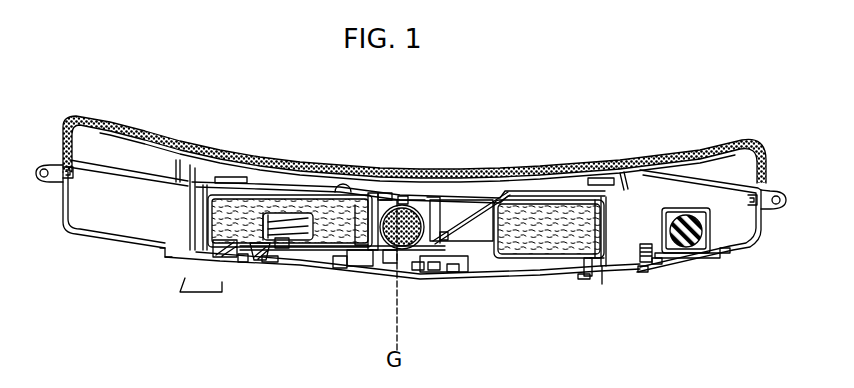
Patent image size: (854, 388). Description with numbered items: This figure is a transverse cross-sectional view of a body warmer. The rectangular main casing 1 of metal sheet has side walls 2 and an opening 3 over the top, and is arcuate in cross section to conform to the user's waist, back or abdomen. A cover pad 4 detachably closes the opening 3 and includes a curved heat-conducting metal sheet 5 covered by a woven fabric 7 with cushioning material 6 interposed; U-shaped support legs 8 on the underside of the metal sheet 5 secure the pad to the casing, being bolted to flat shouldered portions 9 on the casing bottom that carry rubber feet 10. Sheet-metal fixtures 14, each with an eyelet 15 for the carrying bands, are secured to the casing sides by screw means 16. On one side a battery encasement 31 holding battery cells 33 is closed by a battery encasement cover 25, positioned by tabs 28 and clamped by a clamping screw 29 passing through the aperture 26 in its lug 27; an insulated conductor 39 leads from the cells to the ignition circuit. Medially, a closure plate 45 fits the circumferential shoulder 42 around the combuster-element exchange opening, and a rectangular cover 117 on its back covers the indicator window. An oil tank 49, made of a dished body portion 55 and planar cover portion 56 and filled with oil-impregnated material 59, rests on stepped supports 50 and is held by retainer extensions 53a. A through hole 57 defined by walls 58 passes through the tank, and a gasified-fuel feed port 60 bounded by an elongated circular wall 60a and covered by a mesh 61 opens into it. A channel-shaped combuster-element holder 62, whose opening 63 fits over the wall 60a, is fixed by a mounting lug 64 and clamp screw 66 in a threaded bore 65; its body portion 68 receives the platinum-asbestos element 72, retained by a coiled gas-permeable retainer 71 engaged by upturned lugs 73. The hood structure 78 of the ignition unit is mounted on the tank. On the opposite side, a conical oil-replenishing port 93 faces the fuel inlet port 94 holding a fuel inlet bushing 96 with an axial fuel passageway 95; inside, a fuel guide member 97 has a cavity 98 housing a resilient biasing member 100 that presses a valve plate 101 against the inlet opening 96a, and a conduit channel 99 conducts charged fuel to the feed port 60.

The main casing 1 is at (517, 278).
The side walls 2 is at (68, 208).
The opening 3 is at (740, 178).
The cover pad 4 is at (735, 142).
The metal sheet 5 is at (700, 156).
The cushioning material 6 is at (683, 155).
The woven fabric 7 is at (667, 154).
The support legs 8 is at (634, 189).
The shouldered portions 9 is at (166, 250).
The feet 10 is at (630, 309).
The fixtures 14 is at (778, 193).
The eyelet 15 is at (776, 212).
The screw means 16 is at (747, 200).
The battery encasement cover 25 is at (694, 258).
The through aperture 26 is at (655, 247).
The lug 27 is at (643, 273).
The tabs 28 is at (724, 253).
The clamping screw 29 is at (657, 265).
The battery encasement 31 is at (710, 224).
The battery cells 33 is at (690, 245).
The insulated conductor 39 is at (514, 190).
The circumferential shoulder 42 is at (455, 275).
The closure plate 45 is at (418, 272).
The oil tank 49 is at (584, 278).
The stepped supports 50 is at (630, 292).
The extension 53a is at (608, 182).
The body portion 55 is at (592, 280).
The cover portion 56 is at (556, 212).
The through hole 57 is at (506, 196).
The walls 58 is at (544, 204).
The oil-impregnated material 59 is at (600, 182).
The gasified-fuel feed port 60 is at (383, 210).
The elongated circular wall 60a is at (405, 200).
The mesh 61 is at (372, 195).
The combuster-element holder 62 is at (414, 206).
The opening 63 is at (388, 195).
The mounting lug 64 is at (375, 272).
The threaded bore 65 is at (372, 235).
The clamp screw 66 is at (360, 267).
The channel-shaped body portion 68 is at (444, 234).
The gas-permeable retainer 71 is at (391, 264).
The platinum-asbestos element 72 is at (430, 200).
The upturned lugs 73 is at (448, 266).
The hood structure 78 is at (443, 205).
The oil-replenishing port 93 is at (270, 262).
The fuel inlet port 94 is at (290, 252).
The axial fuel passageway 95 is at (258, 262).
The fuel inlet bushing 96 is at (212, 267).
The inlet opening 96a is at (242, 262).
The fuel guide member 97 is at (292, 238).
The cavity 98 is at (205, 240).
The conduit channel 99 is at (306, 250).
The resilient biasing member 100 is at (275, 222).
The valve plate 101 is at (262, 214).
The rectangular cover 117 is at (440, 292).